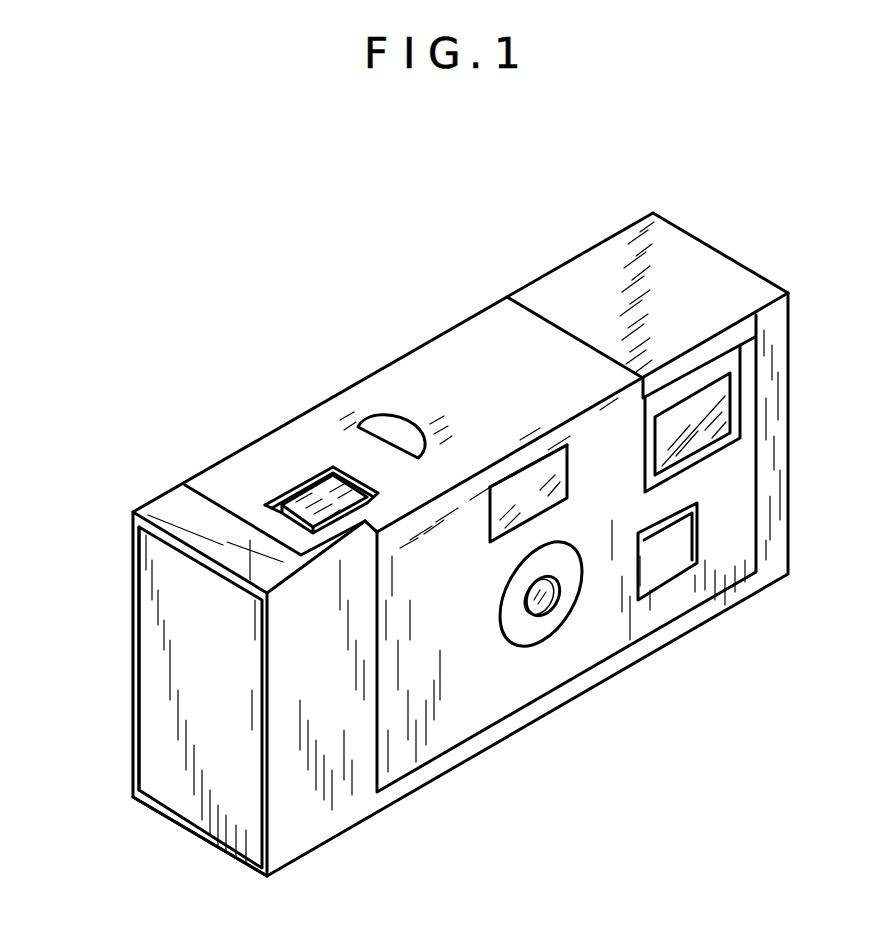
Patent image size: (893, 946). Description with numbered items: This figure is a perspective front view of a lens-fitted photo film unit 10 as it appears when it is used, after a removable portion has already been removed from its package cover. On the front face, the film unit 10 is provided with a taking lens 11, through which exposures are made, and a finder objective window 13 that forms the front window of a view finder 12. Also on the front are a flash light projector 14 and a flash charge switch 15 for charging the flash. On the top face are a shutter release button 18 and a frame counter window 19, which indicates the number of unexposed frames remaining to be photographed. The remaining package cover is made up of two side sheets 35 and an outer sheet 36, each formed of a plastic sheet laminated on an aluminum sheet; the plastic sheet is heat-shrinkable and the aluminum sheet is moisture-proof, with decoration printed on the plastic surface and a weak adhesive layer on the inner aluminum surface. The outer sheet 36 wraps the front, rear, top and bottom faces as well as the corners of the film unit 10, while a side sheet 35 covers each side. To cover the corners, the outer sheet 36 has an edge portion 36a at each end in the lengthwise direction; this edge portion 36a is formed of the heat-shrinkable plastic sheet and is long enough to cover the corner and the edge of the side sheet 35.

The lens-fitted photo film unit 10 is at (466, 314).
The taking lens 11 is at (553, 603).
The view finder 12 is at (566, 443).
The finder objective window 13 is at (520, 485).
The flash light projector 14 is at (692, 410).
The flash charge switch 15 is at (668, 565).
The shutter release button 18 is at (309, 493).
The frame counter window 19 is at (388, 425).
The side sheet 35 is at (163, 690).
The outer sheet 36 is at (168, 510).
The edge portion 36a is at (205, 838).